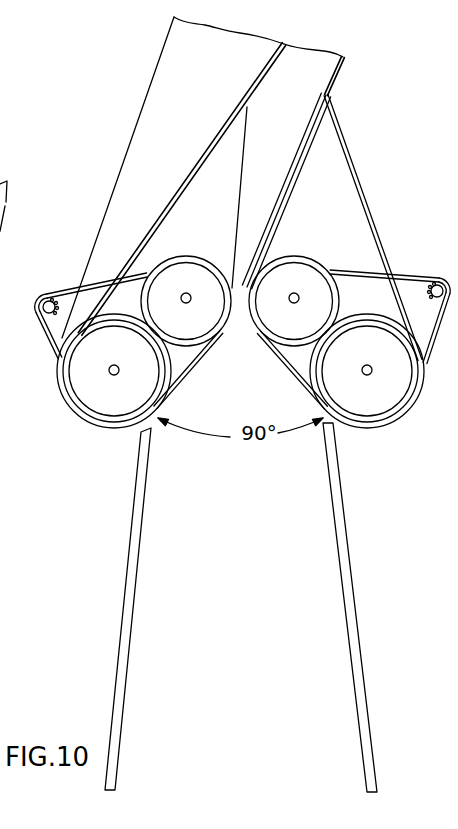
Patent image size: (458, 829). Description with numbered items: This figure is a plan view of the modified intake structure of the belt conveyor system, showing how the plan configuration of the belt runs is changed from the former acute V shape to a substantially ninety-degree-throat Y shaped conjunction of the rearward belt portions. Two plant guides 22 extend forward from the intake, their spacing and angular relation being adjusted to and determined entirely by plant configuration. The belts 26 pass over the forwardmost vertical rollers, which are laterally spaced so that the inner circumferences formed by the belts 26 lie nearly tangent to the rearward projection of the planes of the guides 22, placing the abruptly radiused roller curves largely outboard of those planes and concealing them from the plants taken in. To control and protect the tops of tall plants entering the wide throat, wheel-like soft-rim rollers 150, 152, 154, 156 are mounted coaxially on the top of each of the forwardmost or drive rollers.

The plant guides 22 is at (126, 588).
The belts 26 is at (313, 206).
The soft-rim roller 150 is at (95, 404).
The soft-rim roller 152 is at (350, 404).
The soft-rim roller 154 is at (170, 328).
The soft-rim roller 156 is at (276, 328).